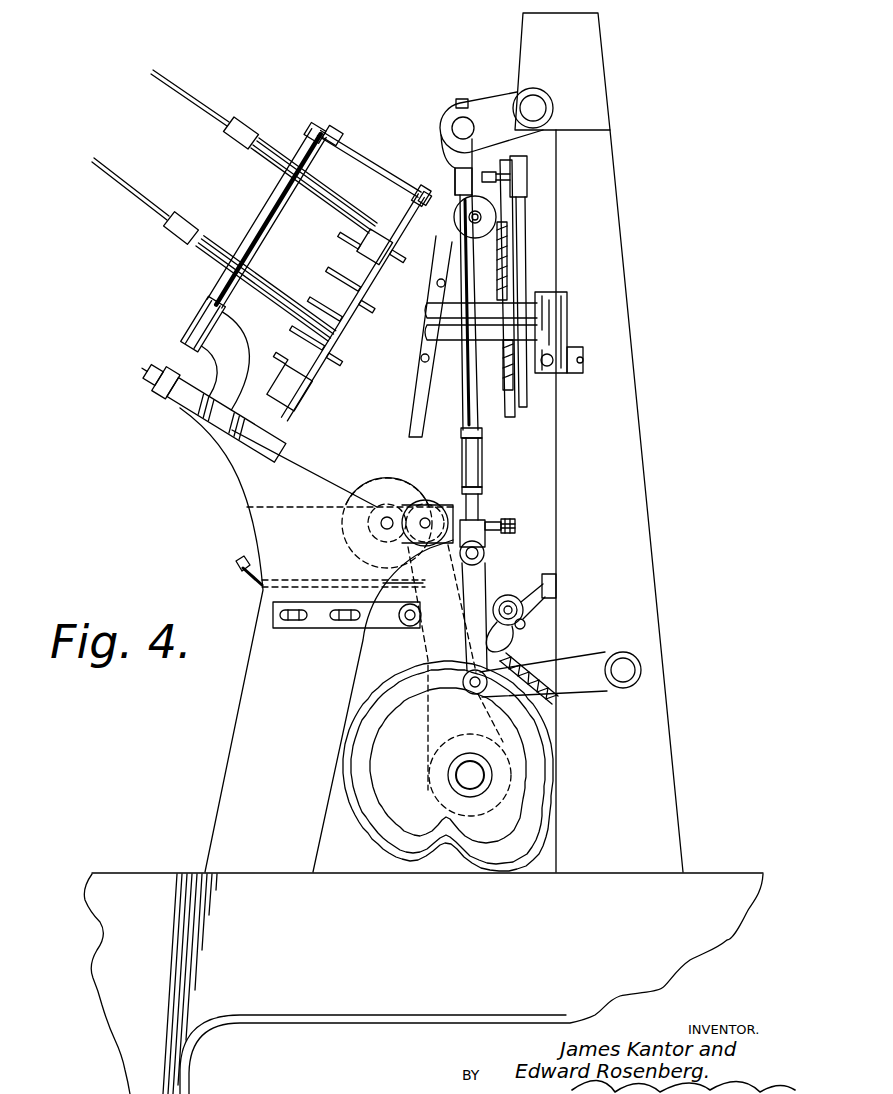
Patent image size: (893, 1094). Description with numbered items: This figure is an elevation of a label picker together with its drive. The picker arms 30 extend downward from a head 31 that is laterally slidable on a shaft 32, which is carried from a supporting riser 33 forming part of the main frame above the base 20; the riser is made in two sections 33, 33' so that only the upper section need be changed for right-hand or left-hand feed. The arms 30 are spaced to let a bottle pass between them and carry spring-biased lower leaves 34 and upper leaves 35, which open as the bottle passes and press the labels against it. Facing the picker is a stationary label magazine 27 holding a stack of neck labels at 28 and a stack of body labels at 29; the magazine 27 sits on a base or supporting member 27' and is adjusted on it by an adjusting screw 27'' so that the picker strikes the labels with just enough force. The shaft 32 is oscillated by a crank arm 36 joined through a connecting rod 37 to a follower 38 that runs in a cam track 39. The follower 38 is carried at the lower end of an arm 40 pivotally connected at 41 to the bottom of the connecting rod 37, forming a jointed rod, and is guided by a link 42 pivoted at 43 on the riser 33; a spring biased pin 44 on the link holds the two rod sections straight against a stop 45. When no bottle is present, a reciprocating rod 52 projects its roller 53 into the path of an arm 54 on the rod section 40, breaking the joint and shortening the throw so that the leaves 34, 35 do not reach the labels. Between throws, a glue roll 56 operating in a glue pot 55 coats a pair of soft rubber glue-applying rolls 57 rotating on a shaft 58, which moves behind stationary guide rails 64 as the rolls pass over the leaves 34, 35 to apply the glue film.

The base 20 is at (151, 882).
The label magazine 27 is at (263, 247).
The base or supporting member 27' is at (316, 640).
The adjusting screw 27'' is at (211, 410).
The stack of labels for the bottle neck 28 is at (396, 263).
The stack of labels for the bottle body 29 is at (325, 368).
The arms 30 is at (521, 404).
The head 31 is at (518, 188).
The shaft 32 is at (548, 103).
The supporting riser 33 is at (619, 501).
The upper riser section 33' is at (587, 71).
The lower leaves 34 is at (507, 413).
The upper leaves 35 is at (504, 262).
The crank arm 36 is at (507, 107).
The connecting rod 37 is at (468, 405).
The follower 38 is at (467, 673).
The cam track 39 is at (503, 867).
The arm 40 is at (476, 575).
The pivot 41 is at (485, 552).
The link 42 is at (594, 663).
The pivot 43 is at (625, 678).
The spring biased pin 44 is at (507, 663).
The stop 45 is at (492, 520).
The reciprocating rod 52 is at (512, 606).
The roller 53 is at (525, 600).
The arm 54 is at (524, 623).
The glue pot 55 is at (248, 526).
The glue roll 56 is at (383, 488).
The glue-applying rolls 57 is at (453, 195).
The shaft 58 is at (470, 218).
The guide rails 64 is at (422, 395).